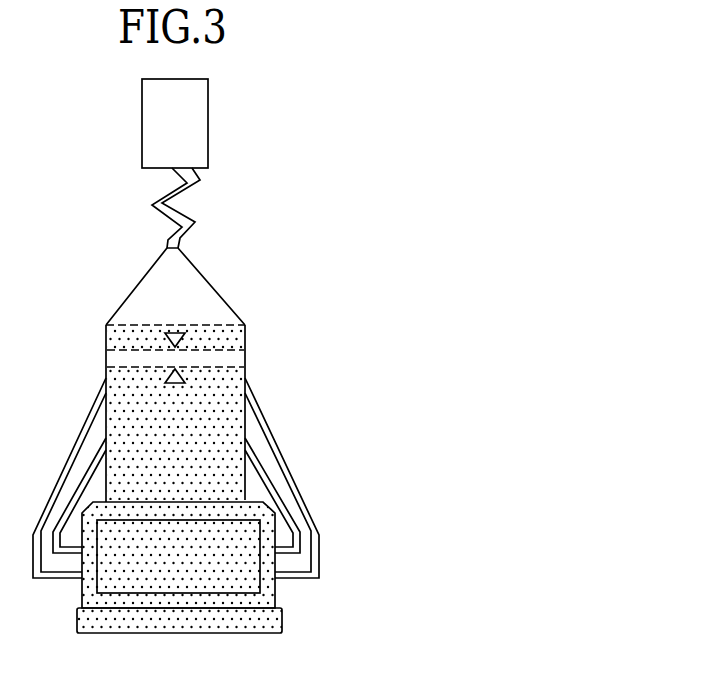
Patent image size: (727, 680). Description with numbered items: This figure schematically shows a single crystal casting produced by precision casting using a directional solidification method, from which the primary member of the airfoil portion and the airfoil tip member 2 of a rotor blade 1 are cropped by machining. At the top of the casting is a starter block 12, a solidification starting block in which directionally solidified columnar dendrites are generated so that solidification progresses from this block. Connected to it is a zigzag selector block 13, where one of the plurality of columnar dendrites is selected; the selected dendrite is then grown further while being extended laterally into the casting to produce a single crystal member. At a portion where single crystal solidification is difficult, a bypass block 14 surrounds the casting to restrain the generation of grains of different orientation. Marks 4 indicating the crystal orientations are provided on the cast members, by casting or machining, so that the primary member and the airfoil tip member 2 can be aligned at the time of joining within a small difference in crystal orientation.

The rotor blade 1 is at (250, 562).
The airfoil tip member 2 is at (245, 332).
The marks indicating the orientations 4 is at (164, 378).
The starter block 12 is at (142, 125).
The selector block 13 is at (151, 207).
The bypass block 14 is at (289, 468).